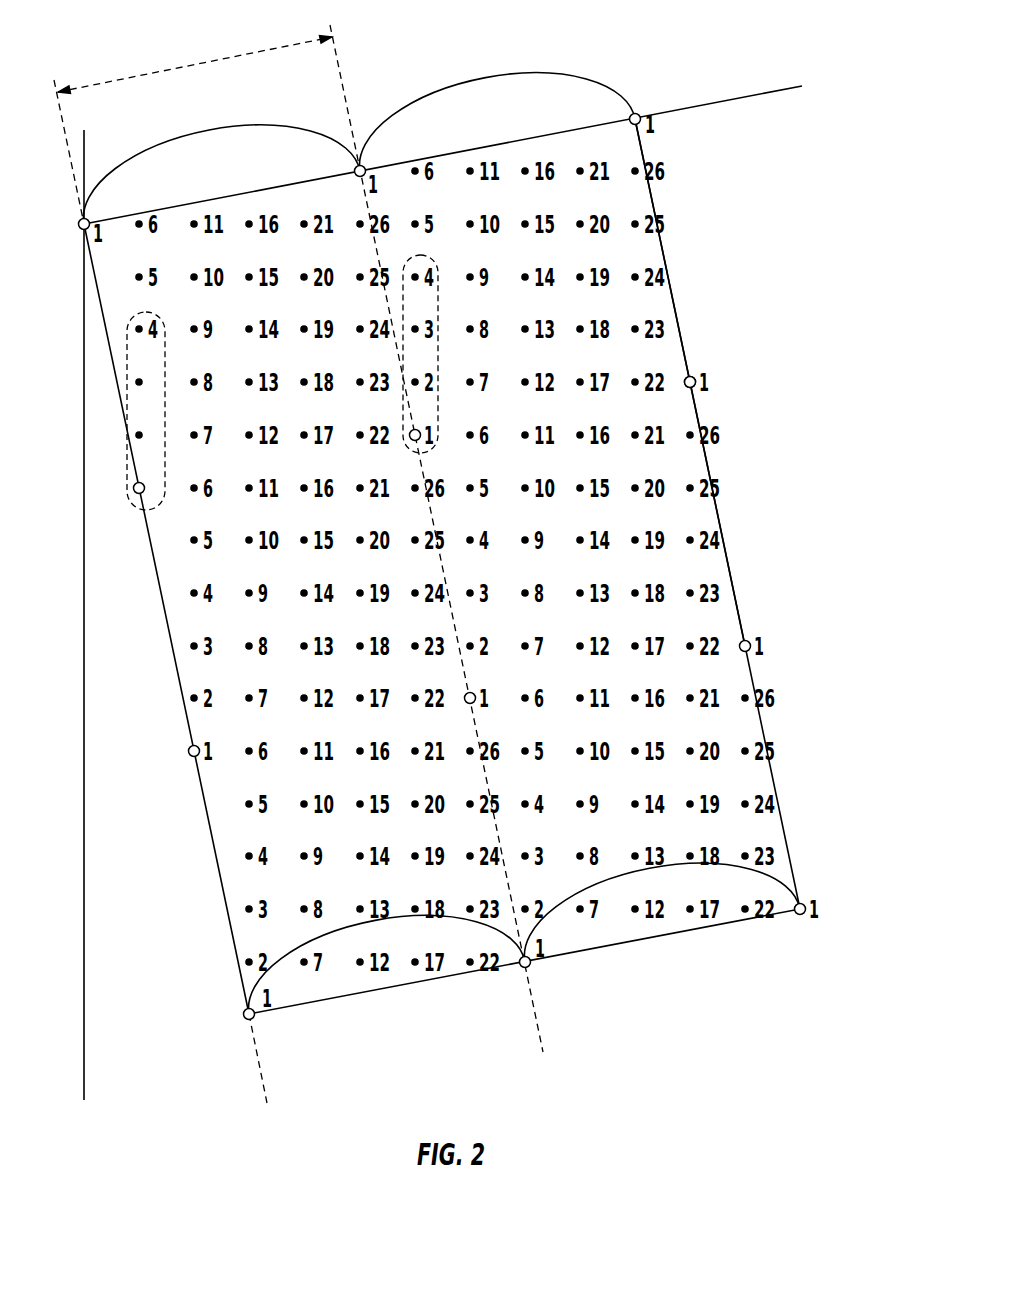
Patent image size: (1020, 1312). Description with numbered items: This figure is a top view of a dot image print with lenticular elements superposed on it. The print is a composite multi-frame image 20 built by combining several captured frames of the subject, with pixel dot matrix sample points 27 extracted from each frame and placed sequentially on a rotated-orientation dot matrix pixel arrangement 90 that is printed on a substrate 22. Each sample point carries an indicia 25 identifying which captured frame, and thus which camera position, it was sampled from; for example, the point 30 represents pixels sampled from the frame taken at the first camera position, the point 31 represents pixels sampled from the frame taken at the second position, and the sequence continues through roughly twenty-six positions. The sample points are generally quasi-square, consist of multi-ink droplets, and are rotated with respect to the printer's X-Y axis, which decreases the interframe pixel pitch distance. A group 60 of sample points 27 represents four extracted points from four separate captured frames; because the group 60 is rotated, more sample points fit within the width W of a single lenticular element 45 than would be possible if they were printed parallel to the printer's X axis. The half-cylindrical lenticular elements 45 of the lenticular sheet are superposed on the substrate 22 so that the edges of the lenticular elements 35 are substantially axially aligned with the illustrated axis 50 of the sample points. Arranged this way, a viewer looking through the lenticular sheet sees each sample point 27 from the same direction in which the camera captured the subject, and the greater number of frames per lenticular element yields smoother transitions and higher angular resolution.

The composite multi-frame image 20 is at (737, 498).
The printing substrate 22 is at (691, 250).
The indicia 25 is at (169, 416).
The pixel dot matrix sample points 27 is at (100, 392).
The point 30 is at (130, 517).
The point 31 is at (100, 445).
The lenticular elements 35 is at (443, 155).
The lenticular element 45 is at (359, 136).
The axis 50 is at (324, 564).
The group 60 is at (240, 382).
The dot matrix pixel arrangement 90 is at (717, 514).
The swath width W is at (195, 65).